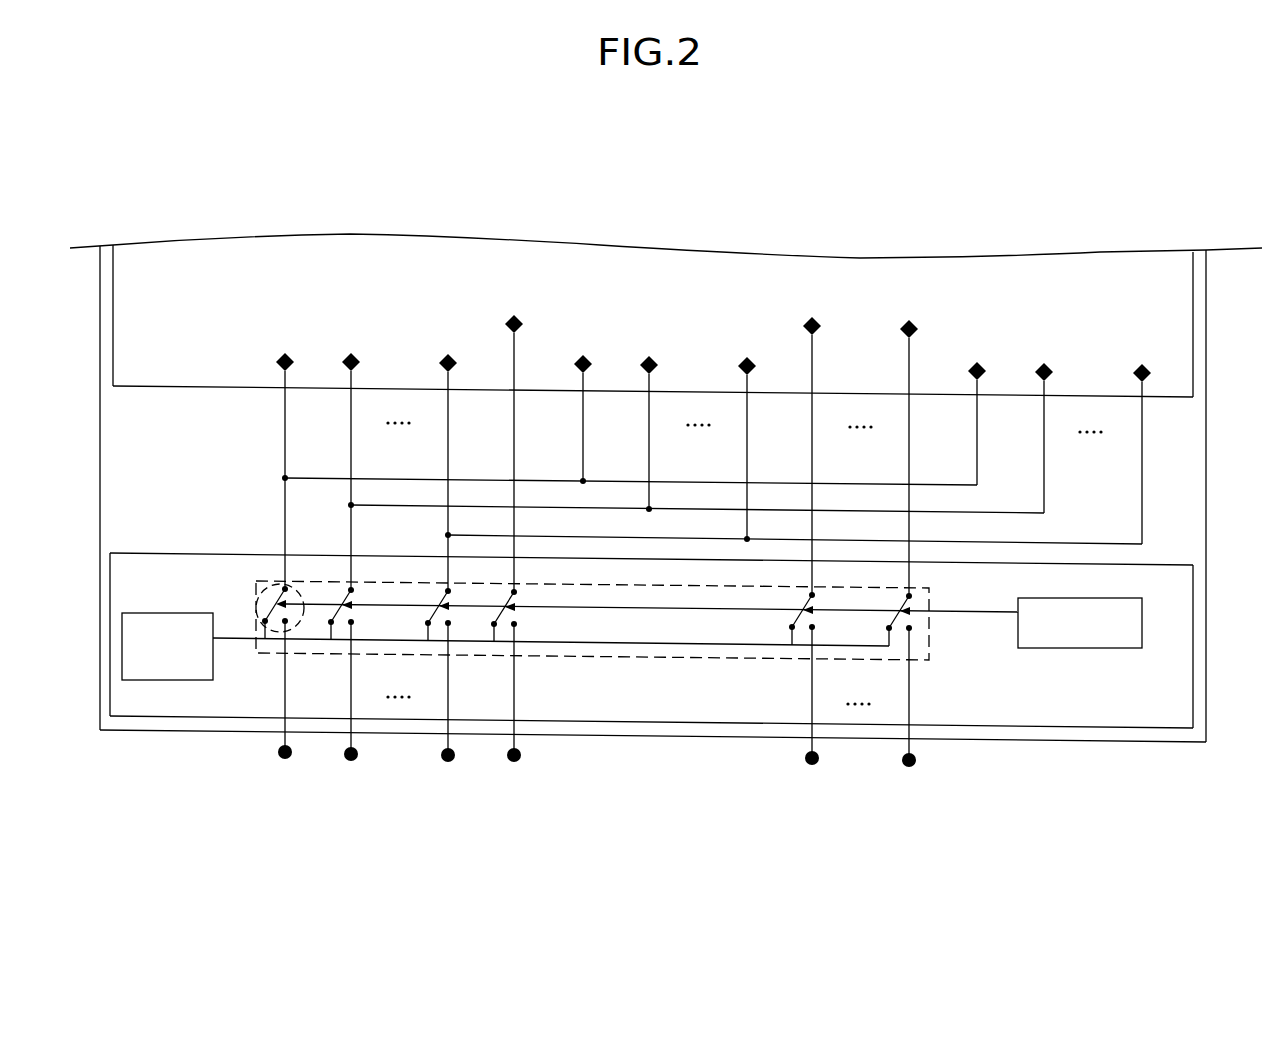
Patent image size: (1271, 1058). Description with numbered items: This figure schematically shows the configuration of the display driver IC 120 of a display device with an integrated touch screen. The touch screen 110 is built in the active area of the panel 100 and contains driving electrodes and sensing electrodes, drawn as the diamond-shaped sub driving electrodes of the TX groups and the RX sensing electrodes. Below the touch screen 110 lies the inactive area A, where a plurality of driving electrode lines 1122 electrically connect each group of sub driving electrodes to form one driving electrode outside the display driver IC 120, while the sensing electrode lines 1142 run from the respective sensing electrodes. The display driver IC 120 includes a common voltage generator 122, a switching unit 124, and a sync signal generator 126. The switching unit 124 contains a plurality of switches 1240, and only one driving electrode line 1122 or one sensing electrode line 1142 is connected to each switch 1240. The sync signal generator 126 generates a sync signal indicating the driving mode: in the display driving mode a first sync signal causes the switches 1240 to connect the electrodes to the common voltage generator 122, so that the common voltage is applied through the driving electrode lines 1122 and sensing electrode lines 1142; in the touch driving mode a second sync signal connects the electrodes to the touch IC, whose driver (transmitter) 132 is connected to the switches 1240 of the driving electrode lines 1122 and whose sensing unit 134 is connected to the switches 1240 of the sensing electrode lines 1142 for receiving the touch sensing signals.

The panel 100 is at (1206, 485).
The touch screen 110 is at (1193, 357).
The display driver IC 120 is at (1193, 593).
The common voltage generator 122 is at (175, 680).
The switching unit 124 is at (929, 650).
The sync signal generator 126 is at (1142, 630).
The driving electrode line 1122 is at (285, 431).
The sensing electrode line 1142 is at (514, 473).
The switch 1240 is at (257, 603).
The driver (transmitter) 132 is at (282, 796).
The sensing unit 134 is at (908, 797).
The inactive area A is at (135, 418).